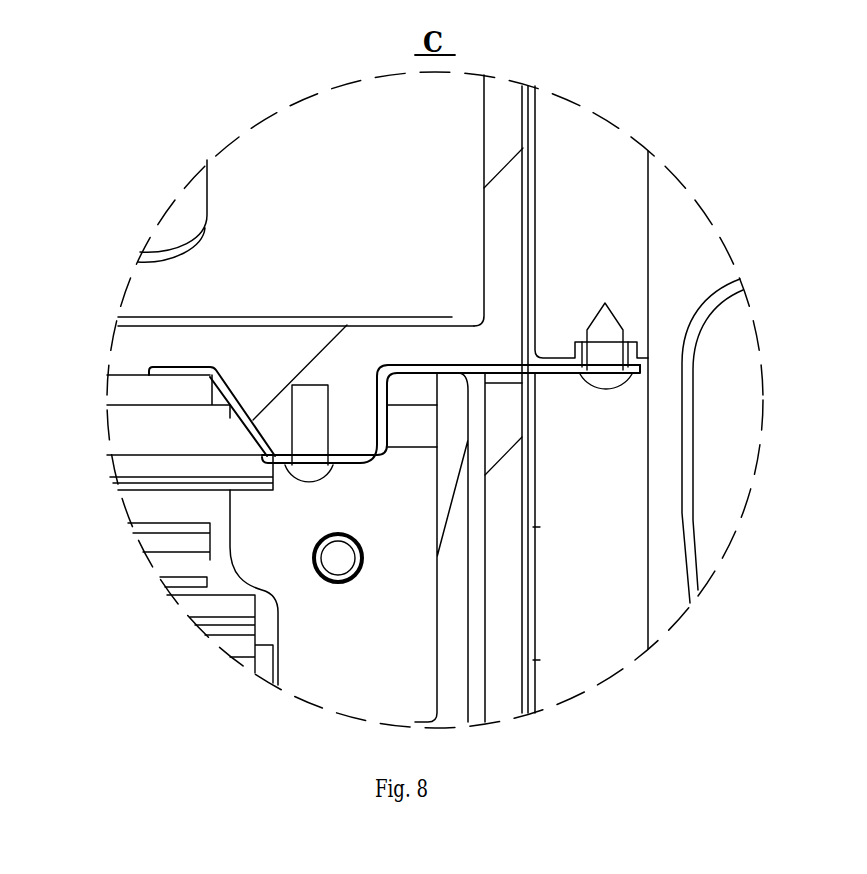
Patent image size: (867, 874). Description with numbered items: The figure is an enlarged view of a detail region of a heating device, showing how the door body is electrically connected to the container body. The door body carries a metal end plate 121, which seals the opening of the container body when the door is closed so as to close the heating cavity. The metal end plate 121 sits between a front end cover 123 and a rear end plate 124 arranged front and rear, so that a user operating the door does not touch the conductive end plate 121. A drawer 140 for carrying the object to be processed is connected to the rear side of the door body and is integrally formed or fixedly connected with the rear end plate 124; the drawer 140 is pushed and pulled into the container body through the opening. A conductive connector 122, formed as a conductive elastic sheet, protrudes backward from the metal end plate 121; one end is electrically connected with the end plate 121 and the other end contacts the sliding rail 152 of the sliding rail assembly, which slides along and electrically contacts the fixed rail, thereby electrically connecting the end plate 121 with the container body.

The metal end plate 121 is at (550, 357).
The conductive connector 122 is at (405, 366).
The front end cover 123 is at (612, 260).
The rear end plate 124 is at (502, 145).
The drawer 140 is at (218, 340).
The sliding rail 152 is at (117, 393).